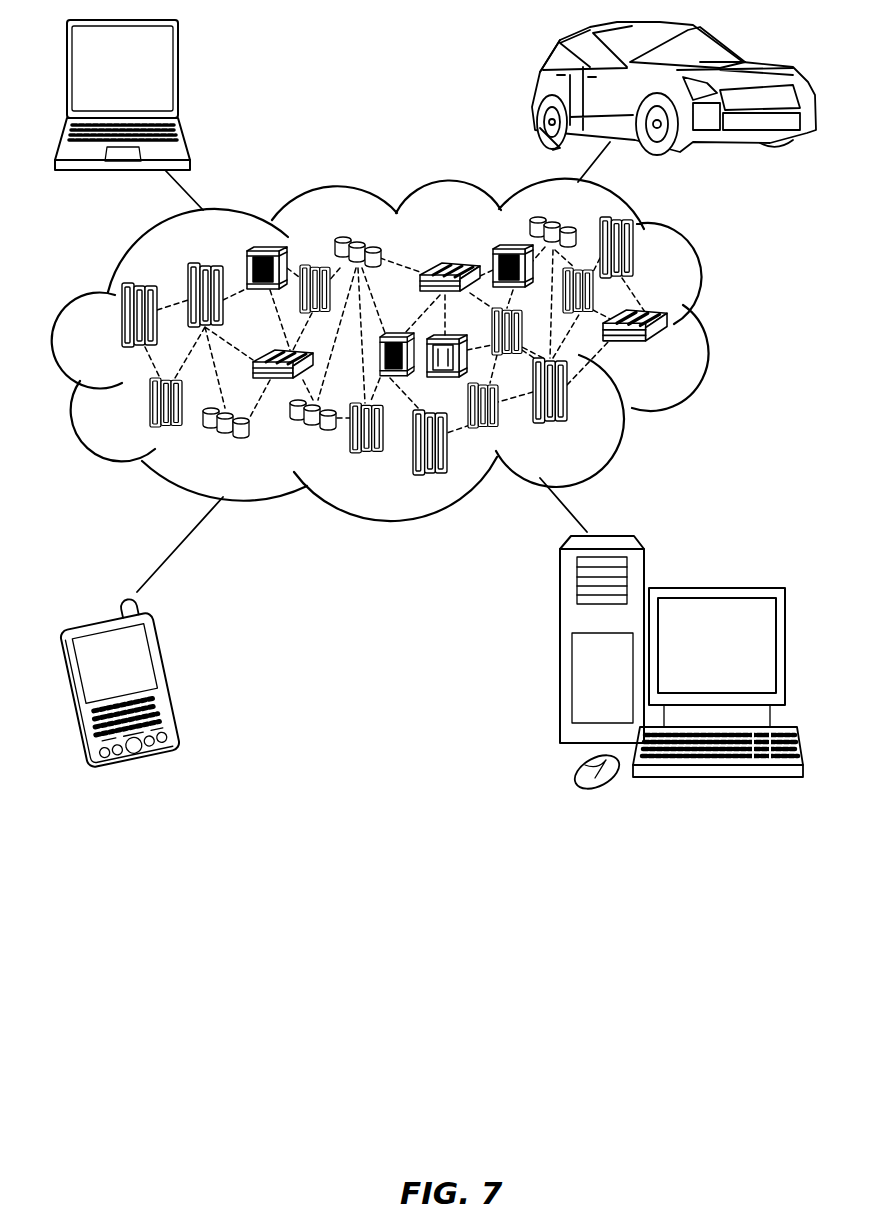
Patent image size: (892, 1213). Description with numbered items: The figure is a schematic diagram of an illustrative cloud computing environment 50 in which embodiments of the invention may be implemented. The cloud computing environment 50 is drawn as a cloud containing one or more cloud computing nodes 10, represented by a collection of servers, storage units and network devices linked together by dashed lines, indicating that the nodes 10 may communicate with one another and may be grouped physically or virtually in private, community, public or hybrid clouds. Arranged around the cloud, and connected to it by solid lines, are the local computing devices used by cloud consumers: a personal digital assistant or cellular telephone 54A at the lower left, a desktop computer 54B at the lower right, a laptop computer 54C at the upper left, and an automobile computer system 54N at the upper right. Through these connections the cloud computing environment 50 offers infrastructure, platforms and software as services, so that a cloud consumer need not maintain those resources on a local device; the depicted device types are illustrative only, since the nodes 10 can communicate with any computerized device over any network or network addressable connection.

The laptop computer 54C is at (178, 78).
The automobile computer system 54N is at (538, 90).
The personal digital assistant or cellular telephone 54A is at (172, 673).
The desktop computer 54B is at (713, 588).
The cloud computing environment 50 is at (408, 367).
The cloud computing node 10 is at (668, 356).